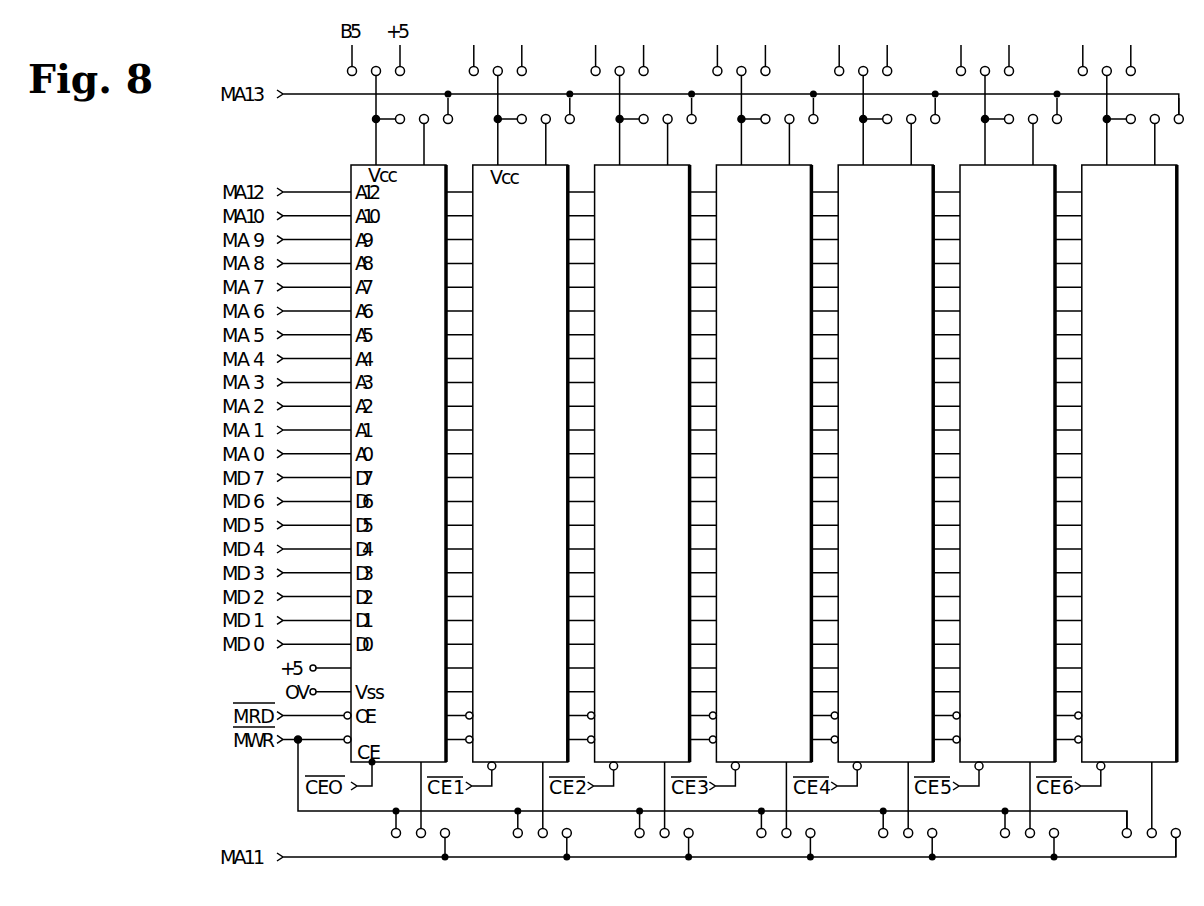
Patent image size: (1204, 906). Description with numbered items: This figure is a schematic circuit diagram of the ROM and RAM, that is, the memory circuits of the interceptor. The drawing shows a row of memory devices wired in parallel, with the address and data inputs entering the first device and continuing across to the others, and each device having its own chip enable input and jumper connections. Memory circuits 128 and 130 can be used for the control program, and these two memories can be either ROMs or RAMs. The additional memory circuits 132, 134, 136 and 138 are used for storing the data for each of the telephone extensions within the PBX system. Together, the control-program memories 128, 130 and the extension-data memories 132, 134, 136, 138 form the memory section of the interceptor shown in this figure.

The memory circuit 128 is at (406, 319).
The memory circuit 130 is at (506, 319).
The additional memory circuit 132 is at (625, 319).
The additional memory circuit 134 is at (749, 319).
The additional memory circuit 136 is at (869, 319).
The additional memory circuit 138 is at (988, 319).